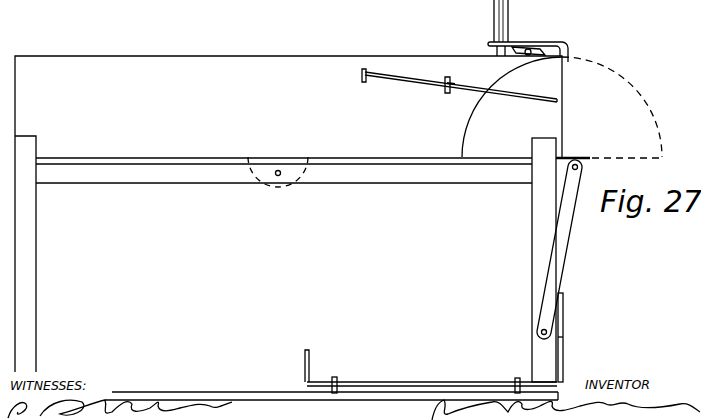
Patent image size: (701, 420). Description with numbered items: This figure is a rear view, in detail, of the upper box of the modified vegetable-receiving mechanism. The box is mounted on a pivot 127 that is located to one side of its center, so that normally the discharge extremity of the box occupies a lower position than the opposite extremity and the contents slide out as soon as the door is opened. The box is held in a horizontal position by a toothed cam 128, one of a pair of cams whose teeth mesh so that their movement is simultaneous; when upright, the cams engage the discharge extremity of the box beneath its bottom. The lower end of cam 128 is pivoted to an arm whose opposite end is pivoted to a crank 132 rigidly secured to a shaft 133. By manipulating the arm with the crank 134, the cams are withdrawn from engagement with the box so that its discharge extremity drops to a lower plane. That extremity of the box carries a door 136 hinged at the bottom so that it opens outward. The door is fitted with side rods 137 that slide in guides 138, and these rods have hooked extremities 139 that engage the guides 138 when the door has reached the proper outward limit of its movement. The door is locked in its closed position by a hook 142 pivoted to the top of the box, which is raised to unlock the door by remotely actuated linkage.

The pivot 127 is at (277, 177).
The cam 128 is at (557, 316).
The crank 132 is at (565, 361).
The shaft 133 is at (437, 382).
The crank 134 is at (299, 369).
The door 136 is at (461, 99).
The side rods 137 is at (451, 88).
The guides 138 is at (447, 93).
The hooked extremities 139 is at (362, 77).
The hook 142 is at (533, 49).